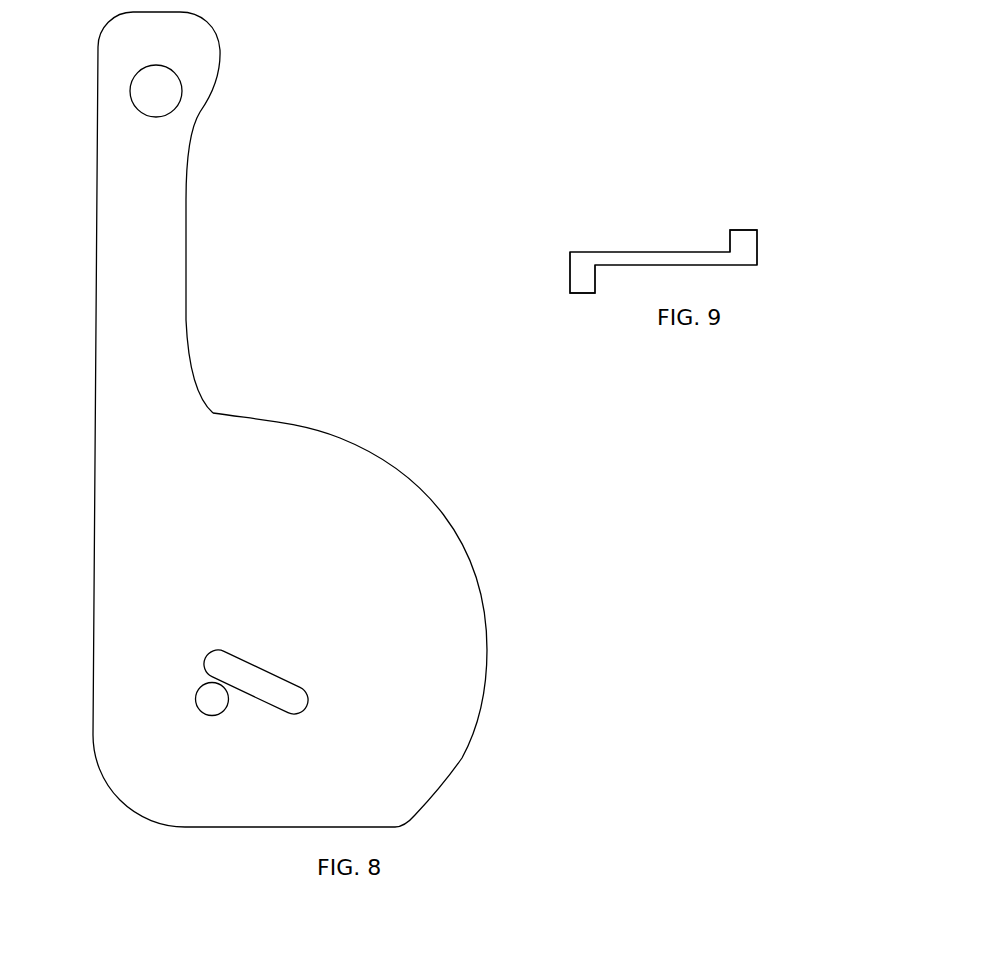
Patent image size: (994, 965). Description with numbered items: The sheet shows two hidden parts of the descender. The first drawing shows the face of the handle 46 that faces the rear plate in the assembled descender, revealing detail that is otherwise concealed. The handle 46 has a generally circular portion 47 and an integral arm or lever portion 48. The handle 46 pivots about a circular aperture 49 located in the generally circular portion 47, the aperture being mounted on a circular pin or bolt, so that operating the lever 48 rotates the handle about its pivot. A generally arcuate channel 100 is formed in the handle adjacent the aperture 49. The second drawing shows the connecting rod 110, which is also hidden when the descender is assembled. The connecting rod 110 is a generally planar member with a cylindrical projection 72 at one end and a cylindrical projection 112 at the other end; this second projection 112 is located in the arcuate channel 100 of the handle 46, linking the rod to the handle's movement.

In FIG. 8, the handle 46 is at (447, 530).
In FIG. 8, the generally circular portion 47 is at (463, 717).
In FIG. 8, the arm/lever portion 48 is at (127, 278).
In FIG. 8, the circular aperture 49 is at (213, 716).
In FIG. 8, the arcuate channel 100 is at (290, 677).
In FIG. 9, the connecting rod 110 is at (663, 252).
In FIG. 9, the cylindrical projection 72 is at (747, 240).
In FIG. 9, the cylindrical projection 112 is at (585, 287).